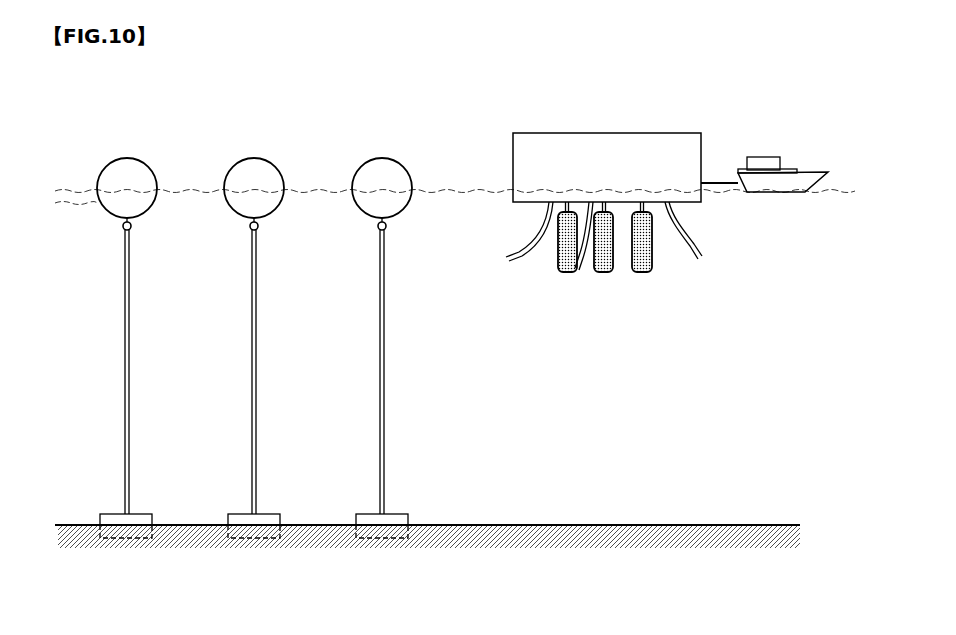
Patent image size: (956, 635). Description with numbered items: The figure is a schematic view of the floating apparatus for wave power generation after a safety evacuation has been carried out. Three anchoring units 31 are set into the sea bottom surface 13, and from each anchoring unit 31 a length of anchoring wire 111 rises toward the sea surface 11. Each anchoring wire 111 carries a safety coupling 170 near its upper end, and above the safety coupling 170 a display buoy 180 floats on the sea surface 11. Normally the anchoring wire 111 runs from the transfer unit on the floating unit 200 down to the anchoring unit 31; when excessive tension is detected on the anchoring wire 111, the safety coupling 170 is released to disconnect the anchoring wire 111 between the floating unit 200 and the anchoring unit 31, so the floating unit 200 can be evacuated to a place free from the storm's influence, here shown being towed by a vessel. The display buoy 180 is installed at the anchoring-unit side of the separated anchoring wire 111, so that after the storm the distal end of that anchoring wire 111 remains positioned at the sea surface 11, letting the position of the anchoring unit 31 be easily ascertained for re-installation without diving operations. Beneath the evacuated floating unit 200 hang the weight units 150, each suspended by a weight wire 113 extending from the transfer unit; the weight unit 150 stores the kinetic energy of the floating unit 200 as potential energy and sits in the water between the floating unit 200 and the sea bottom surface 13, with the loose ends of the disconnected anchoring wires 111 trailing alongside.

The sea surface 11 is at (75, 190).
The sea bottom surface 13 is at (177, 525).
The anchoring unit 31 is at (140, 522).
The anchoring wire 111 is at (129, 364).
The weight wire 113 is at (605, 203).
The weight unit 150 is at (567, 272).
The safety coupling 170 is at (132, 227).
The display buoy 180 is at (140, 161).
The floating unit 200 is at (661, 133).